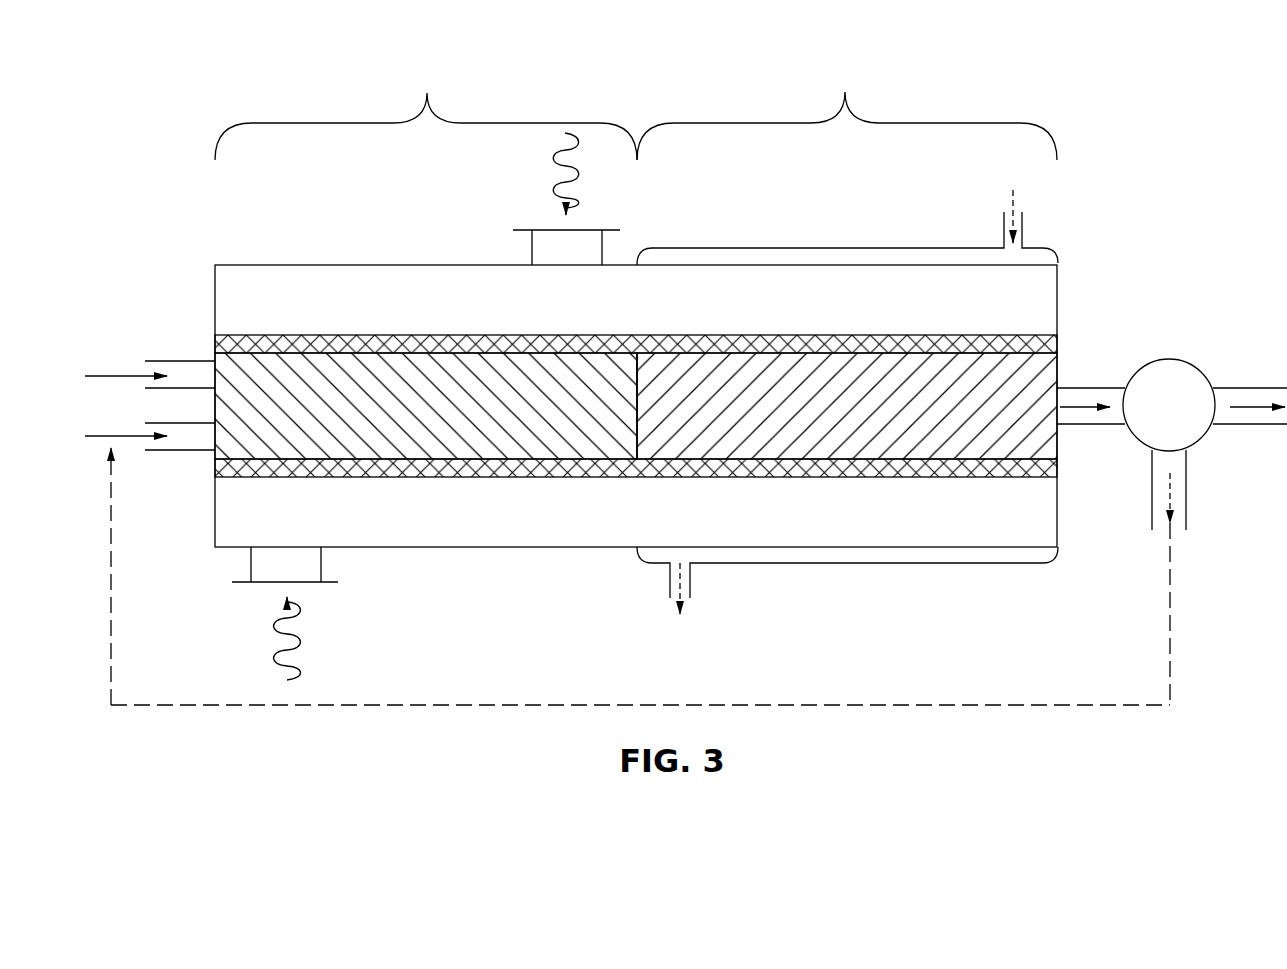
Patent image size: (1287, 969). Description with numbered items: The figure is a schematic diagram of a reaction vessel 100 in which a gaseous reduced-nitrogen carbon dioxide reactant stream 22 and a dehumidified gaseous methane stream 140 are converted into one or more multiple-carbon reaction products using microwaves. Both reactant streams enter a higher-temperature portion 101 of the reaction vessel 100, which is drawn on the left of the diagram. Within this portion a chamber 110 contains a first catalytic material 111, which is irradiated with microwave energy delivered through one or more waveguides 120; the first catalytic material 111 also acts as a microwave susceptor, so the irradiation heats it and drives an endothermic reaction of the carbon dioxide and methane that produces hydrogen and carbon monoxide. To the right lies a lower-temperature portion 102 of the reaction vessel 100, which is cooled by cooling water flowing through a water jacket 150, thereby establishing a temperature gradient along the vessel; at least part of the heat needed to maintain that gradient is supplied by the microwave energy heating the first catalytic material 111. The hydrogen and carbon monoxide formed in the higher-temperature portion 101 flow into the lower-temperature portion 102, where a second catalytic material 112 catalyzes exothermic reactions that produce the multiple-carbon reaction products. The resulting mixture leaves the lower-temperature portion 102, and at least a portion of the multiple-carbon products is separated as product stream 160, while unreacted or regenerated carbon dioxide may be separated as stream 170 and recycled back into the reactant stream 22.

The reaction vessel 100 is at (176, 206).
The higher-temperature portion 101 is at (426, 111).
The lower-temperature portion 102 is at (847, 111).
The chamber 110 is at (752, 347).
The first catalytic material 111 is at (430, 418).
The second catalytic material 112 is at (884, 415).
The waveguide 120 is at (545, 250).
The dehumidified gaseous methane stream 140 is at (115, 376).
The gaseous reduced-nitrogen carbon dioxide reactant stream 22 is at (125, 437).
The water jacket 150 is at (892, 258).
The product stream 160 is at (1245, 405).
The recycle stream 170 is at (1170, 487).